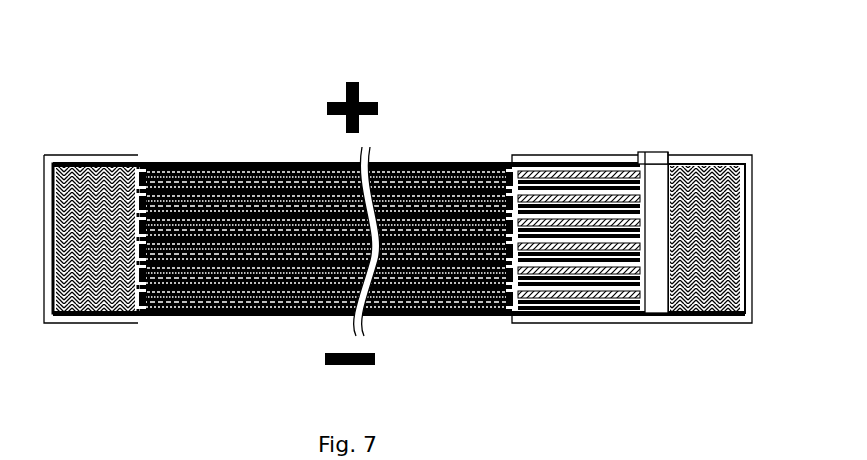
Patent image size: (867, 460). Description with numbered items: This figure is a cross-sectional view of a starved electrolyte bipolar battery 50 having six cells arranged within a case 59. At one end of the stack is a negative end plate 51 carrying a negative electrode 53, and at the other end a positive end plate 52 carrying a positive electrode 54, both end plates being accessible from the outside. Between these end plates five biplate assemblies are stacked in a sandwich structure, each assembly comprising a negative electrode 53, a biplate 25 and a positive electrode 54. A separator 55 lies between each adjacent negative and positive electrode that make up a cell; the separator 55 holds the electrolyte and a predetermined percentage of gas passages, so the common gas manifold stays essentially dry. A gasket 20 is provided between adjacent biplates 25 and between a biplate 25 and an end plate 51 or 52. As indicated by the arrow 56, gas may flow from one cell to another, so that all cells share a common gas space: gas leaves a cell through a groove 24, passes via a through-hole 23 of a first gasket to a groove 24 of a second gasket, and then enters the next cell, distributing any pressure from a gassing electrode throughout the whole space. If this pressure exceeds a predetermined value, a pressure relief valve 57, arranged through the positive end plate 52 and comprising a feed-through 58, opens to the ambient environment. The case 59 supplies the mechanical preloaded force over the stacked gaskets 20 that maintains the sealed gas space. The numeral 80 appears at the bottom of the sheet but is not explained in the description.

The bipolar battery 50 is at (172, 75).
The gasket 20 is at (112, 165).
The biplate 25 is at (185, 165).
The positive end plate 52 is at (238, 165).
The positive electrode 54 is at (310, 165).
The separator 55 is at (465, 165).
The arrow 56 is at (535, 165).
The pressure relief valve 57 is at (648, 152).
The feed-through 58 is at (666, 156).
The case 59 is at (93, 322).
The negative end plate 51 is at (172, 316).
The negative electrode 53 is at (290, 316).
The groove 24 is at (580, 305).
The through-hole 23 is at (650, 303).
The battery pack 80 is at (113, 455).